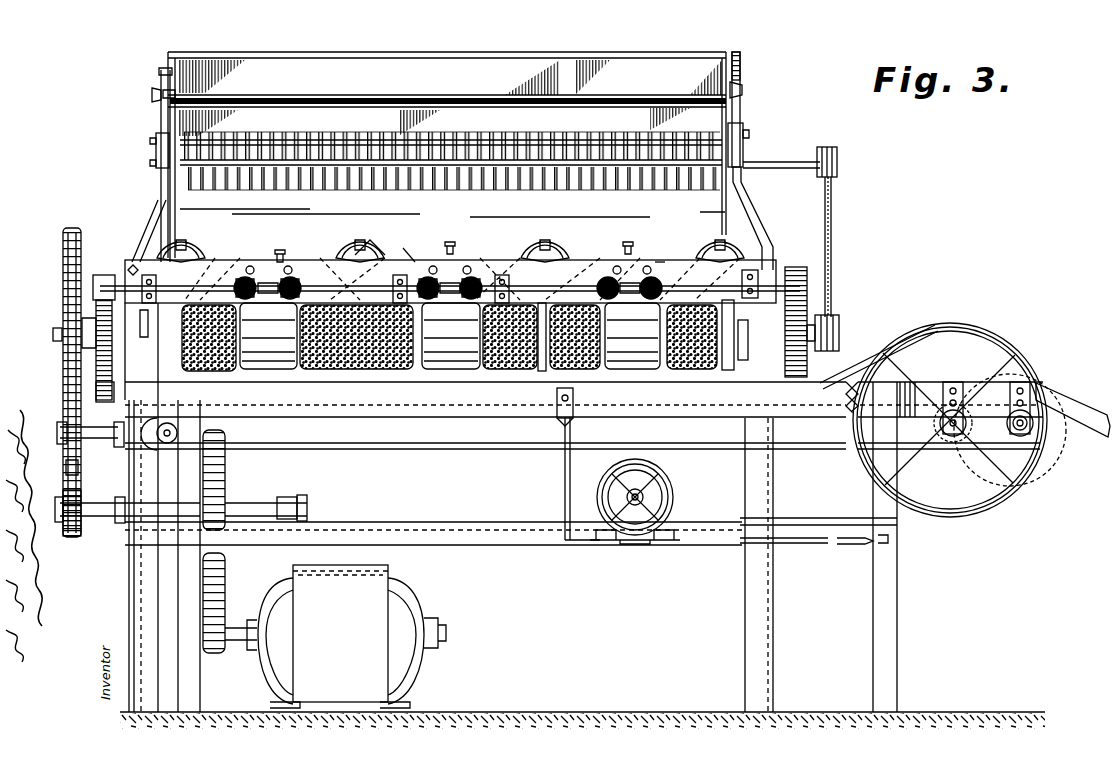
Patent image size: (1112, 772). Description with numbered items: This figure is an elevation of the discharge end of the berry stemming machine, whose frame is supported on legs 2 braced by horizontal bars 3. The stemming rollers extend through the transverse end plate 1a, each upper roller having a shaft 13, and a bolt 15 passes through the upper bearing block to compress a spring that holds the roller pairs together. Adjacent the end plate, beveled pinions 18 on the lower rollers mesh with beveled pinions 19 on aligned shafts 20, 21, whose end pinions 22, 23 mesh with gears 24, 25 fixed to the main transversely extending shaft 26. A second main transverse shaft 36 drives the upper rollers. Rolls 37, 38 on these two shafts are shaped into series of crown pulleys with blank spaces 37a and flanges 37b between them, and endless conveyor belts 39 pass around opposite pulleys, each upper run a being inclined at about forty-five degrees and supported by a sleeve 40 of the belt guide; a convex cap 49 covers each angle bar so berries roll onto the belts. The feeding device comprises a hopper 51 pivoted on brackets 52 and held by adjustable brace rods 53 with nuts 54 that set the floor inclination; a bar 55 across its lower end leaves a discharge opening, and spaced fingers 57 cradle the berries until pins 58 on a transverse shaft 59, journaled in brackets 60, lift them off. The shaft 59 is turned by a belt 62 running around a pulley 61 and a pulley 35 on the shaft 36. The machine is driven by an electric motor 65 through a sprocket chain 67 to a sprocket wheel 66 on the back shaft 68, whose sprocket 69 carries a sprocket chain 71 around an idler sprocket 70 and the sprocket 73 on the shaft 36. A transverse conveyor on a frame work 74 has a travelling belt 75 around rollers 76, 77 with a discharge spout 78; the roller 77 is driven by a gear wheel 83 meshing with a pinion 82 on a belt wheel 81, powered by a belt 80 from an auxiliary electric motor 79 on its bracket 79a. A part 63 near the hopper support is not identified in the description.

The transverse end plate 1a is at (658, 262).
The legs 2 is at (130, 600).
The horizontal bars 3 is at (490, 535).
The shaft 13 is at (433, 262).
The screw or bolt 15 is at (280, 250).
The beveled pinions 18 is at (250, 280).
The beveled pinions 19 is at (467, 268).
The aligned shaft 20 is at (548, 286).
The aligned shaft 21 is at (175, 295).
The pinion 22 is at (798, 264).
The pinion 23 is at (103, 273).
The gear 24 is at (584, 408).
The gear 25 is at (97, 406).
The main transversely extending shaft 26 is at (55, 333).
The pulley 35 is at (835, 322).
The second main transverse shaft 36 is at (840, 337).
The roll 37 is at (650, 352).
The blank spaces 37a is at (437, 360).
The flanges 37b is at (330, 360).
The roll 38 is at (575, 350).
The endless conveyor belts 39 is at (222, 362).
The tube or sleeve 40 is at (212, 258).
The convex cap or roof 49 is at (370, 255).
The upper run of the belt a is at (403, 245).
The hopper 51 is at (498, 70).
The brackets 52 is at (152, 216).
The adjustable brace rods 53 is at (163, 117).
The nuts 54 is at (162, 96).
The plate or bar 55 is at (612, 117).
The spaced fingers 57 is at (545, 134).
The pins 58 is at (545, 190).
The transverse shaft 59 is at (772, 162).
The brackets 60 is at (166, 150).
The pulley 61 is at (835, 150).
The belt 62 is at (830, 235).
The brace 63 is at (738, 210).
The electric motor 65 is at (370, 592).
The sprocket wheel 66 is at (222, 487).
The sprocket chain 67 is at (222, 600).
The back shaft 68 is at (295, 505).
The sprocket 69 is at (82, 530).
The idler sprocket 70 is at (57, 432).
The sprocket chain 71 is at (80, 470).
The sprocket 73 is at (62, 256).
The frame work 74 is at (512, 412).
The travelling belt 75 is at (450, 448).
The roller 76 is at (155, 445).
The roller 77 is at (1045, 470).
The discharge spout 78 is at (1070, 400).
The auxiliary electric motor 79 is at (670, 485).
The bracket 79a is at (666, 561).
The belt 80 is at (803, 520).
The belt wheel 81 is at (908, 373).
The pinion 82 is at (956, 440).
The gear wheel 83 is at (990, 458).